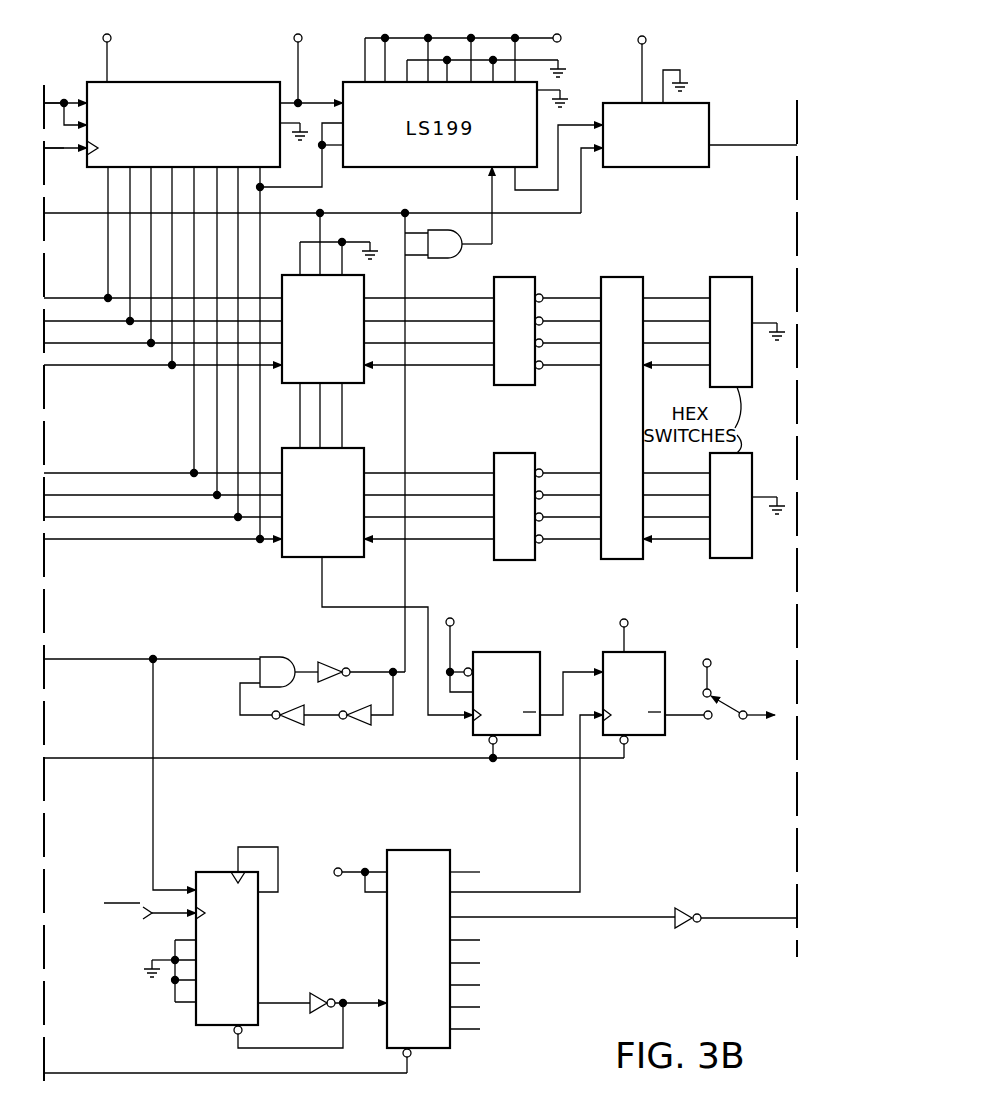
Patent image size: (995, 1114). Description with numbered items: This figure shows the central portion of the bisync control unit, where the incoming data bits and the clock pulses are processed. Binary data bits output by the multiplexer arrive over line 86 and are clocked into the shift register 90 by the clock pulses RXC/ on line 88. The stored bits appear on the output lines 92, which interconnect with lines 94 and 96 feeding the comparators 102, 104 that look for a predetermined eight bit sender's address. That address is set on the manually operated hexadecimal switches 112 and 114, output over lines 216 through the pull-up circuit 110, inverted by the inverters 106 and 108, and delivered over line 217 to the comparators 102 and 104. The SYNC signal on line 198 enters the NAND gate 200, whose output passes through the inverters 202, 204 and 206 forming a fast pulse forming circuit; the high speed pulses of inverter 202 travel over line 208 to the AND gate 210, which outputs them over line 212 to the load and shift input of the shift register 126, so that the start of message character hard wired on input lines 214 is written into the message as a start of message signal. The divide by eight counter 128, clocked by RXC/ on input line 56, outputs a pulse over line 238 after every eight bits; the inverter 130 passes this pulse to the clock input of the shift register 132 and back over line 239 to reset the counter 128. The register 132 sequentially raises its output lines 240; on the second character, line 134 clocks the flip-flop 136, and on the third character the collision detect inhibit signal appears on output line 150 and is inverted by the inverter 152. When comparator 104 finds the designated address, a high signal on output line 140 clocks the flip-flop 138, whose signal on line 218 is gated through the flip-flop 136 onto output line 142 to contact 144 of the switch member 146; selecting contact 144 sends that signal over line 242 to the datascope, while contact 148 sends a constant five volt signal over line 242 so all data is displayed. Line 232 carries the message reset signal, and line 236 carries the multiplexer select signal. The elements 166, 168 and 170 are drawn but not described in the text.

The input line 56 is at (170, 915).
The line 86 is at (52, 103).
The line 88 is at (58, 150).
The shift register 90 is at (208, 82).
The output lines 92 is at (105, 236).
The lines 94 is at (101, 366).
The line 96 is at (90, 472).
The 74LS85 comparator 102 is at (356, 383).
The 74LS85 comparator 104 is at (352, 448).
The inverter 106 is at (528, 277).
The inverter 108 is at (528, 453).
The pull-up circuit 110 is at (616, 277).
The hexadecimal switch 112 is at (730, 277).
The hexadecimal switch 114 is at (752, 474).
The shift register 126 is at (540, 92).
The 74LS177 divide by eight counter 128 is at (258, 943).
The inverter 130 is at (320, 992).
The 74LS164 shift register 132 is at (450, 1043).
The line 134 is at (582, 872).
The 74LS74 D-type flip-flop 136 is at (632, 652).
The 74LS74 D-type flip-flop 138 is at (498, 652).
The output line 140 is at (418, 607).
The output line 142 is at (686, 720).
The contact 144 is at (706, 722).
The switch member 146 is at (734, 722).
The contact 148 is at (712, 690).
The output line 150 is at (580, 917).
The inverter 152 is at (686, 905).
The shift register input line 166 is at (562, 152).
The LS165 shift register 168 is at (710, 116).
The serial output line 170 is at (778, 148).
The line 198 is at (72, 658).
The NAND gate 200 is at (282, 655).
The inverter 202 is at (352, 657).
The inverter 204 is at (360, 725).
The inverter 206 is at (290, 725).
The line 208 is at (408, 437).
The AND gate 210 is at (436, 262).
The line 212 is at (493, 228).
The input lines 214 is at (440, 38).
The lines 216 is at (660, 300).
The line 217 is at (438, 365).
The line 218 is at (566, 672).
The line 232 is at (140, 758).
The line 236 is at (153, 810).
The line 238 is at (268, 1003).
The line 239 is at (262, 1048).
The output lines 240 is at (464, 872).
The line 242 is at (760, 720).